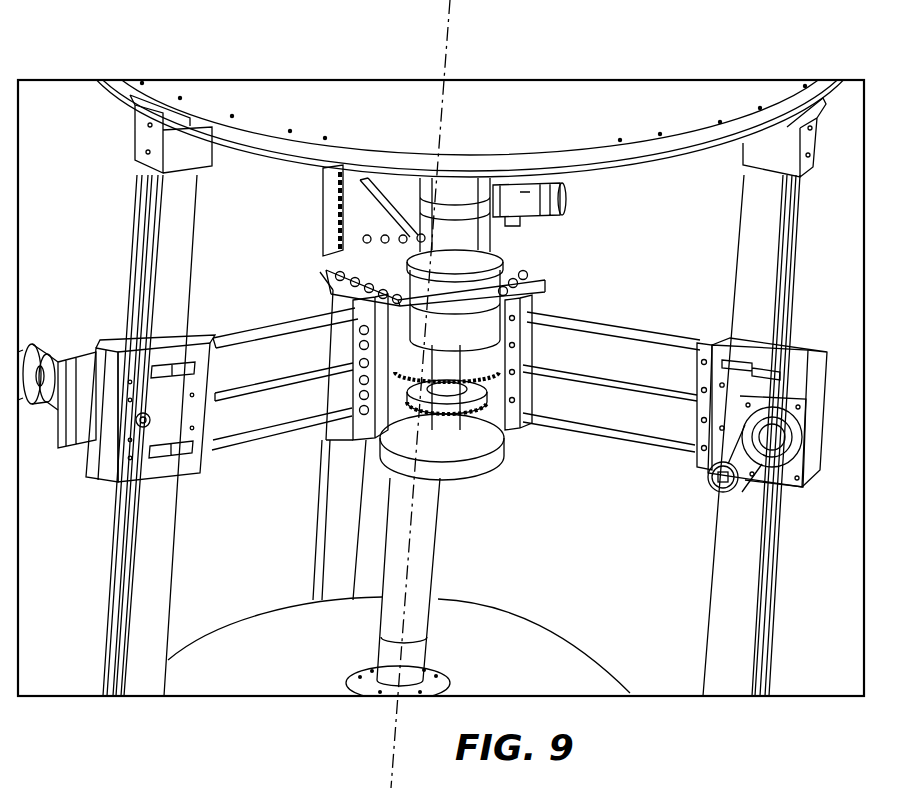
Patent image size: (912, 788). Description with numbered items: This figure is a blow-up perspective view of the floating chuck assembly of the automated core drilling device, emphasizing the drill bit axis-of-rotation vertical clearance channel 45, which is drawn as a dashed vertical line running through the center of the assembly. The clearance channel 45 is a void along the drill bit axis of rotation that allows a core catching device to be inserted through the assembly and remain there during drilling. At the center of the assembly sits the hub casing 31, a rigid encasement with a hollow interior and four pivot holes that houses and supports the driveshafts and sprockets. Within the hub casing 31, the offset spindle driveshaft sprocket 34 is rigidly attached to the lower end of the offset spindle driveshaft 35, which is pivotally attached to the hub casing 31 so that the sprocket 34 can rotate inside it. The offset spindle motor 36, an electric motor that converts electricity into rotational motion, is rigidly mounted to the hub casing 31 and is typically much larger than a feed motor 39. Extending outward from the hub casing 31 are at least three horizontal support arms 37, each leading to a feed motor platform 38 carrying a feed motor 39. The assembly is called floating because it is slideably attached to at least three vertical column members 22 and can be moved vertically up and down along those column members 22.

The vertical column members 22 is at (162, 538).
The hub casing 31 is at (356, 263).
The offset spindle driveshaft sprocket 34 is at (465, 408).
The offset spindle driveshaft 35 is at (447, 448).
The offset spindle motor 36 is at (552, 203).
The horizontal support arms 37 is at (252, 336).
The feed motor platforms 38 is at (97, 466).
The feed motors 39 is at (40, 342).
The drill bit axis-of-rotation vertical clearance channel 45 is at (460, 36).